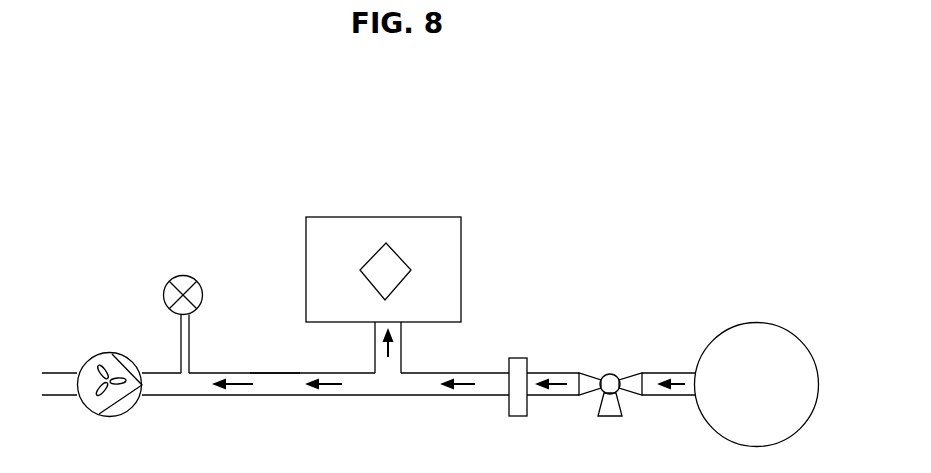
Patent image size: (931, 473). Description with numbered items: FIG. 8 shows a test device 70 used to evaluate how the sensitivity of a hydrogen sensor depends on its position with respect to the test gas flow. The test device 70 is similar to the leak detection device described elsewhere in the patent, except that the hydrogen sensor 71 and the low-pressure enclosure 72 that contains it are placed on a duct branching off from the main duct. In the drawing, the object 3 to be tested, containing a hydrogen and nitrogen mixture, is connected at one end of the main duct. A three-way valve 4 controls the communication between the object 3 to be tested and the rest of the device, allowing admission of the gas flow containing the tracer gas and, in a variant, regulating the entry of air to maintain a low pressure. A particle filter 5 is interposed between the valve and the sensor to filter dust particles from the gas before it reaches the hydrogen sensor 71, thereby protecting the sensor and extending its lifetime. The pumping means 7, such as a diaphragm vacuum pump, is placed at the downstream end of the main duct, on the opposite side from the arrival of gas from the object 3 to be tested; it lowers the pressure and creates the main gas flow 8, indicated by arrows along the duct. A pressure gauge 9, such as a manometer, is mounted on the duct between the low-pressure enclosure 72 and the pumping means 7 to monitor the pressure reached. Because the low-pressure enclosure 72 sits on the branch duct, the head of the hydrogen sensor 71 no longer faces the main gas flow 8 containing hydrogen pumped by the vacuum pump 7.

The test device 70 is at (592, 182).
The object to be tested 3 is at (710, 428).
The three-way valve 4 is at (608, 378).
The particle filter 5 is at (518, 368).
The pumping means 7 is at (110, 370).
The gas flow 8 is at (240, 386).
The pressure gauge 9 is at (180, 283).
The hydrogen sensor 71 is at (375, 268).
The low-pressure enclosure 72 is at (433, 230).